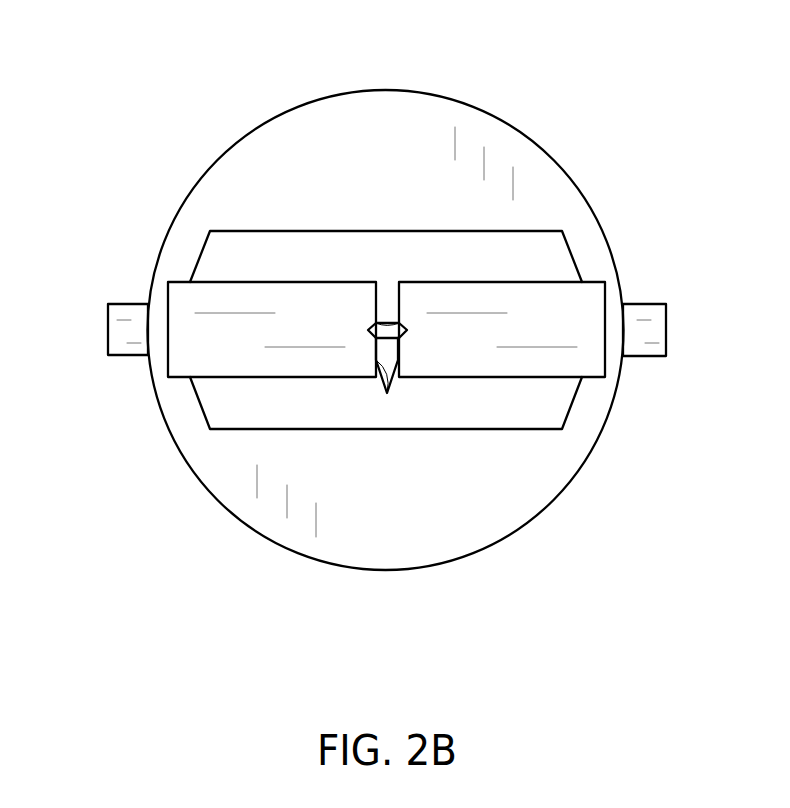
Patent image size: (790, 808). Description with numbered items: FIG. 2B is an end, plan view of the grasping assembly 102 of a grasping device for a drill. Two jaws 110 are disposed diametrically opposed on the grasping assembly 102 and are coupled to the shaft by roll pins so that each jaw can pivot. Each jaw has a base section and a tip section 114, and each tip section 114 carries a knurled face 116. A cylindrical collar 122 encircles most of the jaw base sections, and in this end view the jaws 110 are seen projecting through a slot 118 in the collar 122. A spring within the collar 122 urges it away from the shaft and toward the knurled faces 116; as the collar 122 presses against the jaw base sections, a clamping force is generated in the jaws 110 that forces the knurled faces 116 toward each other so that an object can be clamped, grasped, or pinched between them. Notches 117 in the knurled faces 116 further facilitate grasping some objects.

The grasping assembly 102 is at (81, 197).
The jaws 110 is at (150, 362).
The tip section 114 is at (264, 282).
The knurled face 116 is at (392, 395).
The notches 117 is at (388, 325).
The slot 118 is at (412, 231).
The cylindrical collar 122 is at (585, 466).